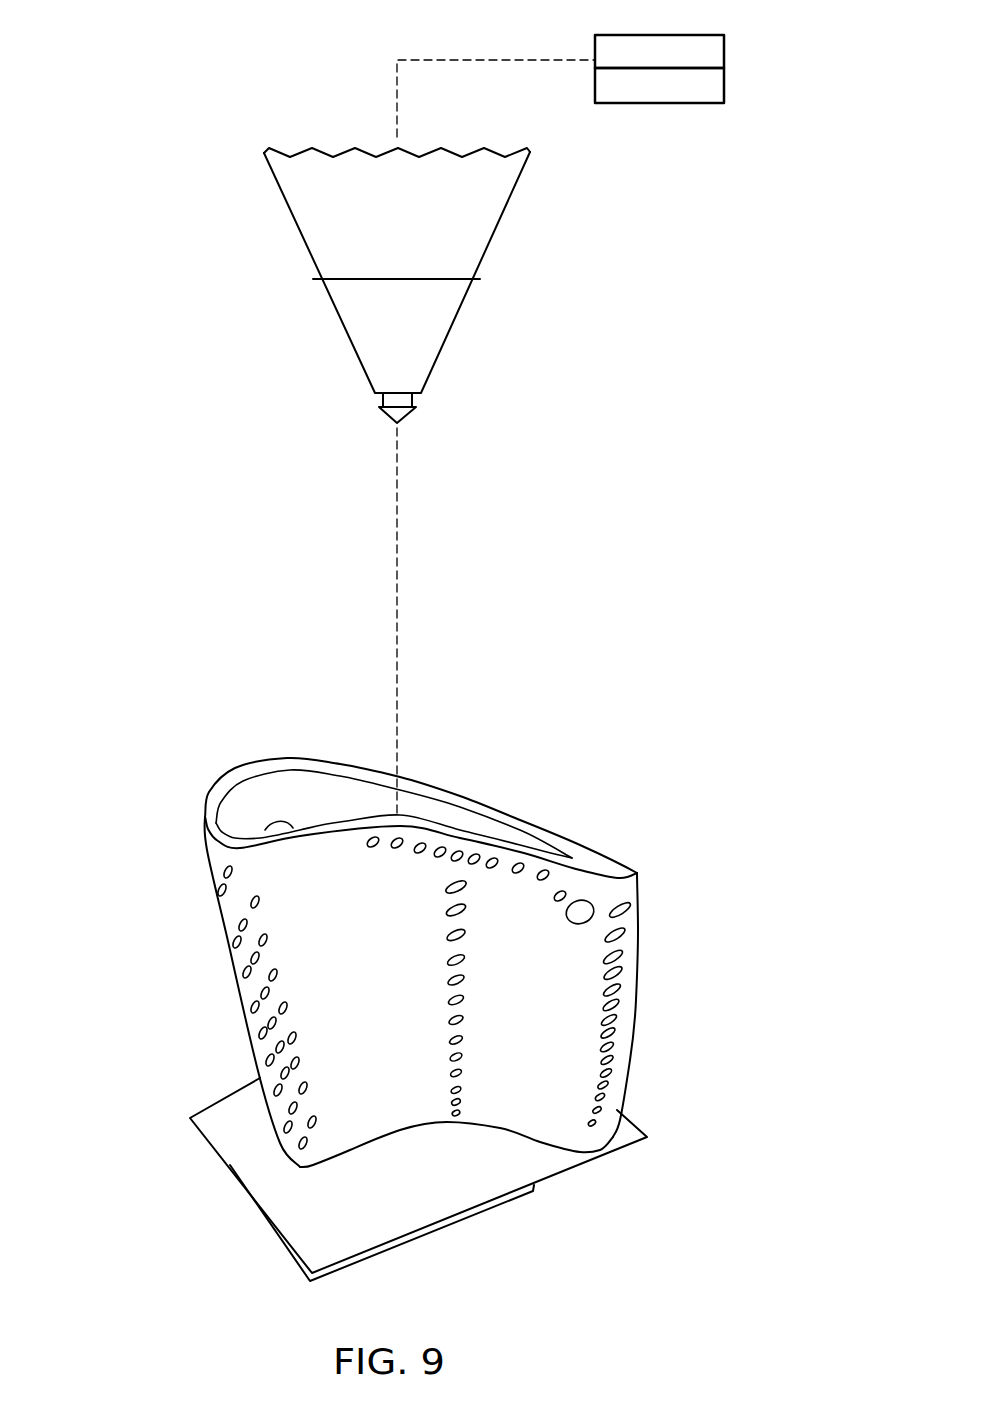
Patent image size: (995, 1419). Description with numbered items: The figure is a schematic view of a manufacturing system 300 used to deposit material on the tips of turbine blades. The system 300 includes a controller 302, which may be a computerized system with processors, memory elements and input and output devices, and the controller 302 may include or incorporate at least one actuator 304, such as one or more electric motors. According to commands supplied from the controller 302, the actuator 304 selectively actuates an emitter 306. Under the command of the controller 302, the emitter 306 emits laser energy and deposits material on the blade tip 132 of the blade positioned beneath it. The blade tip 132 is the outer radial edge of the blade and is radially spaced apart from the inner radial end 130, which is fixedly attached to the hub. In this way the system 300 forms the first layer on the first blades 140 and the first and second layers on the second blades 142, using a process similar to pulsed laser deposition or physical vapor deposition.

The manufacturing system 300 is at (442, 422).
The controller 302 is at (724, 52).
The actuator 304 is at (724, 86).
The emitter 306 is at (434, 333).
The first blades 140 is at (381, 962).
The second blades 142 is at (418, 1019).
The blade tip 132 is at (497, 813).
The inner radial end 130 is at (353, 1132).